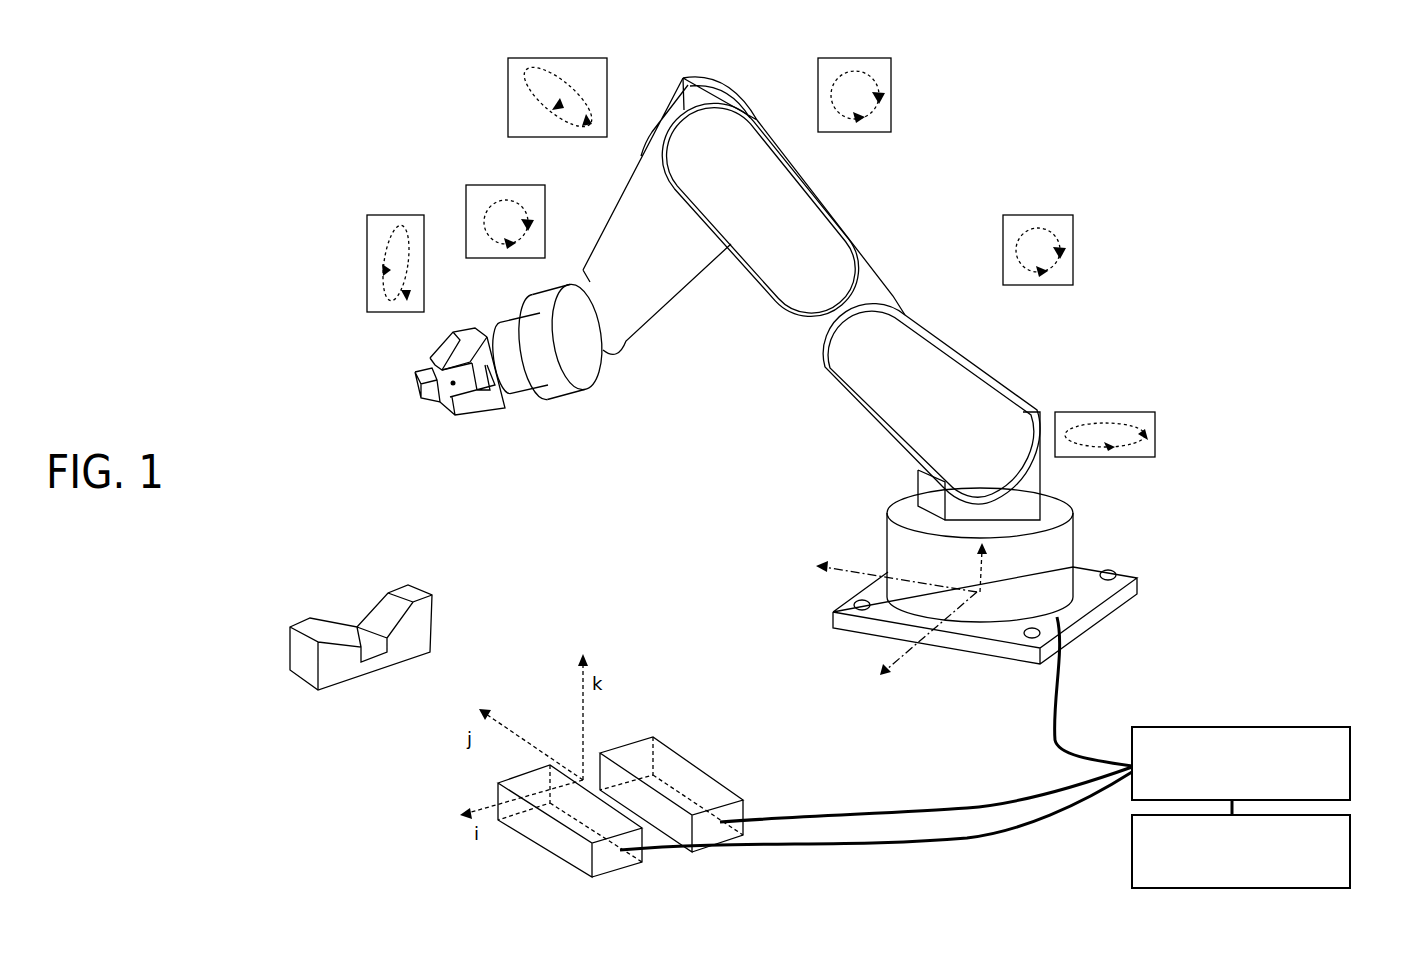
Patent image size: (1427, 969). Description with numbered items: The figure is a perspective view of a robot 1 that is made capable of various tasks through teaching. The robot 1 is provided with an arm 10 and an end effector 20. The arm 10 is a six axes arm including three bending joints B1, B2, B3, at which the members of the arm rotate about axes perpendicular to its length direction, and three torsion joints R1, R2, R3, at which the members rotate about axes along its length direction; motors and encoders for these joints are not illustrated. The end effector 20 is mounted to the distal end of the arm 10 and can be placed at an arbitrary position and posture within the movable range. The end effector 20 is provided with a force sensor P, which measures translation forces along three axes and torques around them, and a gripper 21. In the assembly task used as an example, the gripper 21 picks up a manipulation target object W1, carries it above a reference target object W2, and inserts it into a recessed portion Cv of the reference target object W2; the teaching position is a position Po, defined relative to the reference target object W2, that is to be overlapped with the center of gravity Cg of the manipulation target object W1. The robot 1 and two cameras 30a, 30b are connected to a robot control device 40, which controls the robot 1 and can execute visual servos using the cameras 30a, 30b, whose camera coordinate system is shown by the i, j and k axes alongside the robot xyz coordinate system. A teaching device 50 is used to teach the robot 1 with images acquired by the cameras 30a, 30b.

The robot 1 is at (1053, 73).
The arm 10 is at (843, 227).
The end effector 20 is at (603, 386).
The gripper 21 is at (530, 387).
The force sensor P is at (582, 396).
The manipulation target object W1 is at (423, 398).
The reference target object W2 is at (290, 625).
The center of gravity Cg is at (453, 384).
The recessed portion Cv is at (348, 620).
The position Po is at (366, 634).
The camera 30a is at (592, 877).
The camera 30b is at (691, 818).
The robot control device 40 is at (1350, 783).
The teaching device 50 is at (1350, 870).
The torsion joint R1 is at (1117, 457).
The torsion joint R2 is at (572, 137).
The torsion joint R3 is at (424, 278).
The bending joint B1 is at (1003, 263).
The bending joint B2 is at (818, 108).
The bending joint B3 is at (545, 230).